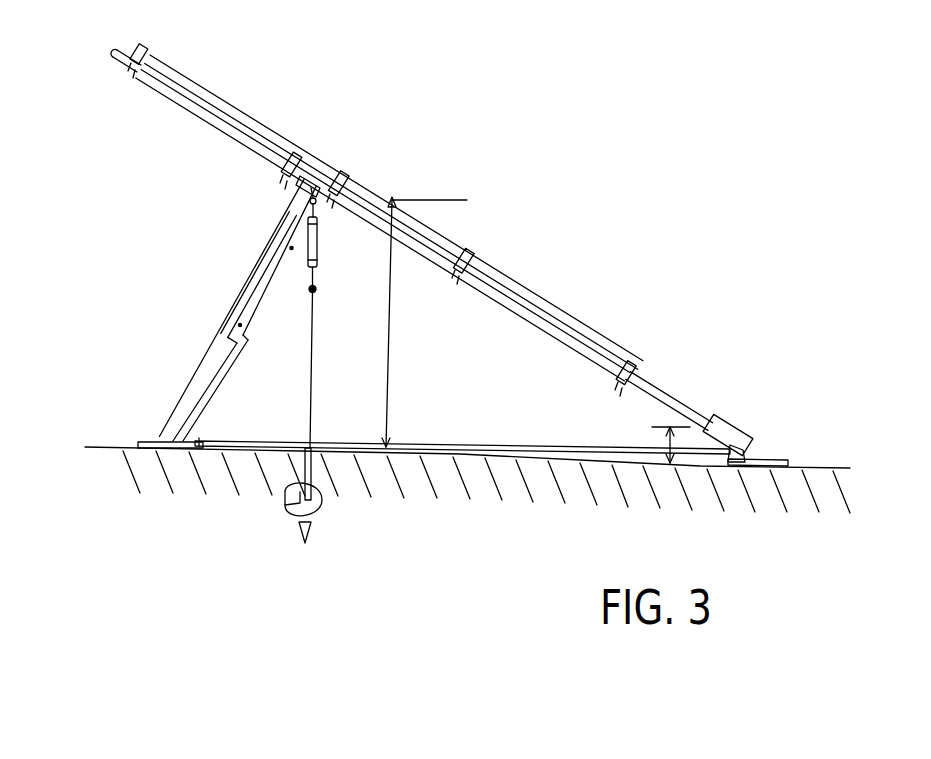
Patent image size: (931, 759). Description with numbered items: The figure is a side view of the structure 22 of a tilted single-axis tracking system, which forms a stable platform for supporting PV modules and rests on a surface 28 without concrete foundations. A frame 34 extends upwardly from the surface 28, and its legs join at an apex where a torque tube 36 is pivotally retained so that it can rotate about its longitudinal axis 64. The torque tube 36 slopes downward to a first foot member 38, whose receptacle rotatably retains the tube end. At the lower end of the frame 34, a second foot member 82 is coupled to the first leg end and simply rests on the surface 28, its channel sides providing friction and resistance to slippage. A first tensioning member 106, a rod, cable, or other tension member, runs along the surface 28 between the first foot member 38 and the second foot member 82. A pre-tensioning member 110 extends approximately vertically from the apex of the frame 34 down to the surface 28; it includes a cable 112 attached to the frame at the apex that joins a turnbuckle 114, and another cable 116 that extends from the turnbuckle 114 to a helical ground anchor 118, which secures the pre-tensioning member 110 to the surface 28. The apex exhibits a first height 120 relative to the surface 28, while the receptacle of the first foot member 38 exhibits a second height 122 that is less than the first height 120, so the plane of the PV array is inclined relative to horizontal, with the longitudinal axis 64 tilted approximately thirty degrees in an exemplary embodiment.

The structure 22 is at (197, 598).
The surface 28 is at (104, 448).
The frame 34 is at (208, 292).
The torque tube 36 is at (686, 400).
The first foot member 38 is at (775, 456).
The longitudinal axis 64 is at (104, 12).
The second foot member 82 is at (152, 442).
The first tensioning member 106 is at (462, 430).
The pre-tensioning member 110 is at (312, 367).
The cable 112 is at (318, 218).
The turnbuckle 114 is at (320, 258).
The cable 116 is at (312, 360).
The helical ground anchor 118 is at (322, 513).
The first height 120 is at (390, 297).
The second height 122 is at (665, 442).